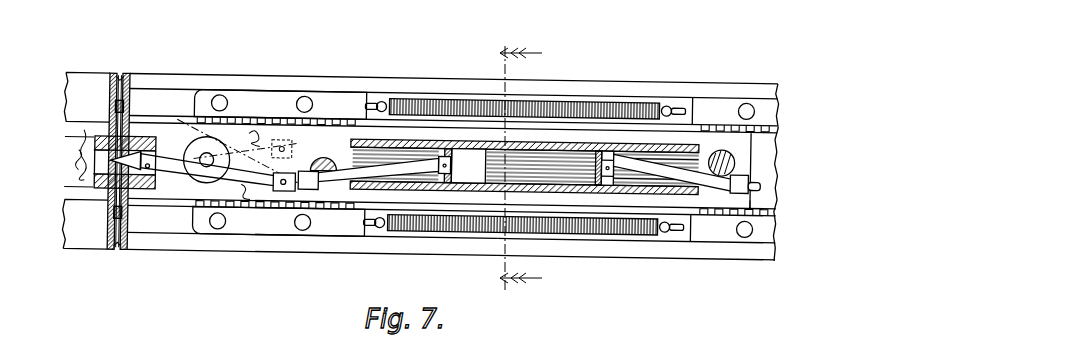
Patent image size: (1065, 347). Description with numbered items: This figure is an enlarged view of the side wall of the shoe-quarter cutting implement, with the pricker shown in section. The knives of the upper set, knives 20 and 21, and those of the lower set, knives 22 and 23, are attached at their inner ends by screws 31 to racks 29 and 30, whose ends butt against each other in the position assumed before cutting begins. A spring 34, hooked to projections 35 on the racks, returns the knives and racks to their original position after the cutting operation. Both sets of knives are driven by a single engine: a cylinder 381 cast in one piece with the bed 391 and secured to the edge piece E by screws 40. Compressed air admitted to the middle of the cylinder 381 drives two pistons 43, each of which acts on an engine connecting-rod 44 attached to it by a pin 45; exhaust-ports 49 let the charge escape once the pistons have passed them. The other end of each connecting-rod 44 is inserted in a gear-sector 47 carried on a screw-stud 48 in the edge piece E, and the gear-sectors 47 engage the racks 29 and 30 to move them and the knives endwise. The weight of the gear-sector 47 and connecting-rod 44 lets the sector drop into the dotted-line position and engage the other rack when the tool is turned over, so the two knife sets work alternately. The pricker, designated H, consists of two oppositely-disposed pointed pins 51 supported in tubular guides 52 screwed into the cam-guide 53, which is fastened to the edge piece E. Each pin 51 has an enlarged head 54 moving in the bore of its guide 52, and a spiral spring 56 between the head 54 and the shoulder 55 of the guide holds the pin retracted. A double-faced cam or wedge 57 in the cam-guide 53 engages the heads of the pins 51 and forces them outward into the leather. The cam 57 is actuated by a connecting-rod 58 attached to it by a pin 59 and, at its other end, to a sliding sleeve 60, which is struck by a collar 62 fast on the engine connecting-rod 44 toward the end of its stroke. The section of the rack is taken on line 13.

The section line 13 is at (517, 165).
The knife 20 is at (80, 84).
The knife 21 is at (742, 84).
The knife 22 is at (345, 242).
The knife 23 is at (617, 248).
The rack 29 is at (356, 103).
The rack 30 is at (631, 102).
The screw 31 is at (222, 98).
The spring 34 is at (548, 227).
The hook 35 is at (377, 228).
The cylinder 381 is at (650, 171).
The bed 391 is at (445, 198).
The screw 40 is at (324, 156).
The piston 43 is at (471, 187).
The engine connecting-rod 44 is at (401, 170).
The pin 45 is at (446, 158).
The gear-sector 47 is at (239, 164).
The screw-stud 48 is at (208, 150).
The exhaust-port 49 is at (454, 186).
The pointed pin 51 is at (123, 77).
The tubular guide 52 is at (132, 87).
The cam-guide 53 is at (100, 179).
The enlarged head 54 is at (98, 135).
The shoulder 55 is at (118, 73).
The spiral spring 56 is at (114, 105).
The double-faced cam 57 is at (137, 170).
The connecting-rod 58 is at (179, 180).
The pin 59 is at (144, 157).
The sliding sleeve 60 is at (286, 166).
The collar 62 is at (311, 170).
The pricker H is at (82, 160).
The edge piece E is at (768, 206).